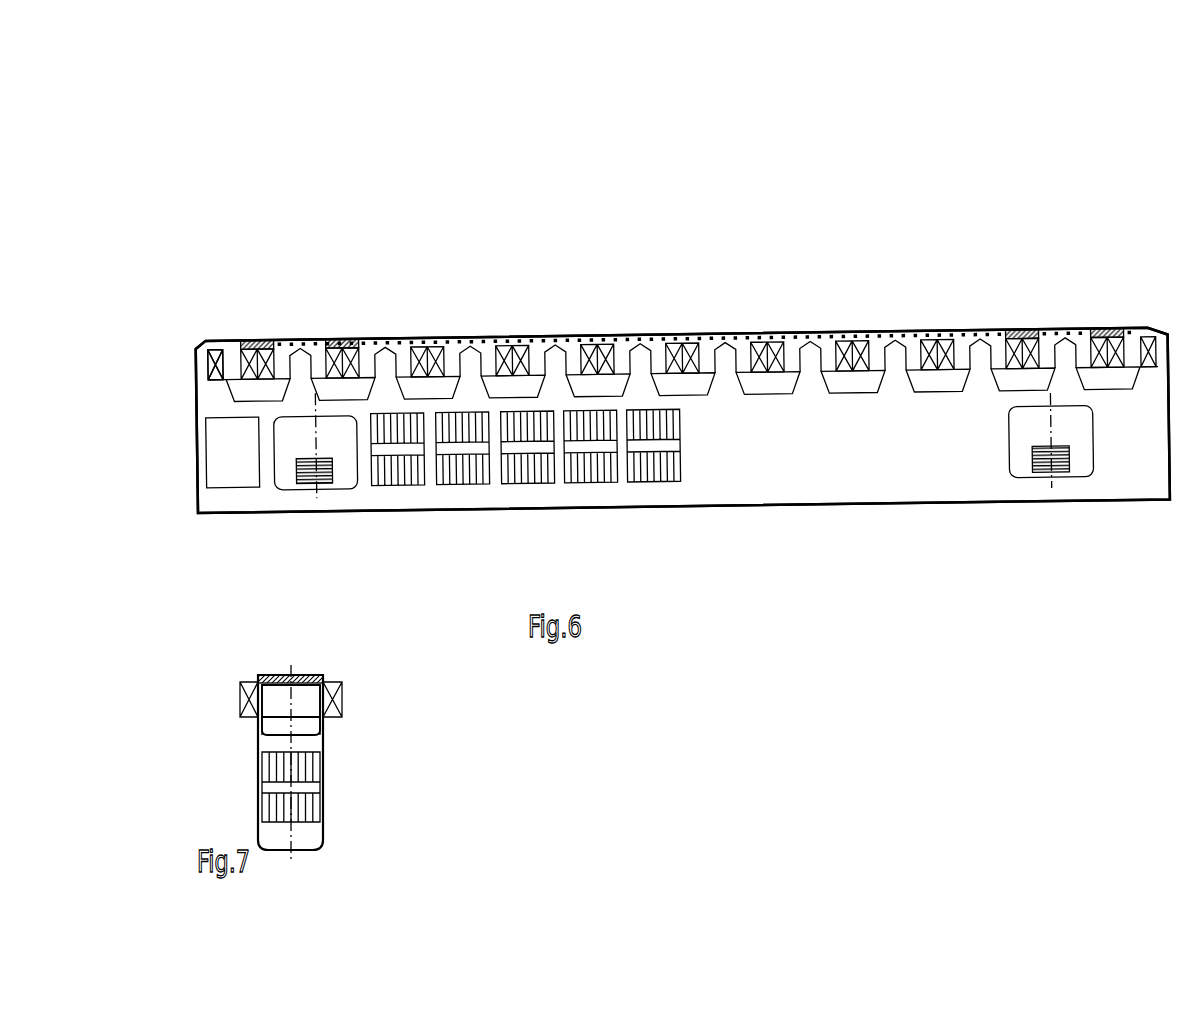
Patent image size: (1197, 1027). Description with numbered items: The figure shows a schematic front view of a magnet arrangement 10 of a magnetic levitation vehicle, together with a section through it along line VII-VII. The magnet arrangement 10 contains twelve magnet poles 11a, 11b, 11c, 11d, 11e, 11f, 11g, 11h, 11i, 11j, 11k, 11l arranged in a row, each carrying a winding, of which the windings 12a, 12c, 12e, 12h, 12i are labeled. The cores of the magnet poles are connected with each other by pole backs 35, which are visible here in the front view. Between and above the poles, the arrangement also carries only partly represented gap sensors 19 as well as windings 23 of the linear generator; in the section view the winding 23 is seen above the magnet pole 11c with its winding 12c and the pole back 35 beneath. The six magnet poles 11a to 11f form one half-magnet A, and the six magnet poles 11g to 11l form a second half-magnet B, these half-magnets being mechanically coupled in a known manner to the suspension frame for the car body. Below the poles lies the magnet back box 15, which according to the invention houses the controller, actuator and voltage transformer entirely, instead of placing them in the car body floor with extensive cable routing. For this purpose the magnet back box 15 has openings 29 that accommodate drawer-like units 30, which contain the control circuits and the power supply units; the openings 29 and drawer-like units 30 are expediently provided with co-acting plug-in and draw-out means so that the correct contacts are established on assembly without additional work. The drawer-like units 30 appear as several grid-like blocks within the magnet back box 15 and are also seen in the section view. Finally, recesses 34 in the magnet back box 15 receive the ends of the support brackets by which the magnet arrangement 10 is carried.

In FIG. 6, the magnet arrangement 10 is at (724, 581).
In FIG. 6, the magnet pole 11a is at (230, 350).
In FIG. 6, the magnet pole 11b is at (286, 358).
In FIG. 6, the magnet pole 11c is at (405, 350).
In FIG. 7, the magnet pole 11c is at (277, 705).
In FIG. 6, the magnet pole 11d is at (487, 350).
In FIG. 6, the magnet pole 11e is at (573, 350).
In FIG. 6, the magnet pole 11f is at (657, 350).
In FIG. 6, the magnet pole 11g is at (743, 350).
In FIG. 6, the magnet pole 11h is at (828, 350).
In FIG. 6, the magnet pole 11i is at (914, 345).
In FIG. 6, the magnet pole 11j is at (997, 345).
In FIG. 6, the magnet pole 11k is at (1081, 345).
In FIG. 6, the magnet pole 11l is at (1135, 345).
In FIG. 6, the winding 12a is at (210, 374).
In FIG. 7, the winding 12c is at (328, 680).
In FIG. 6, the winding 12e is at (592, 350).
In FIG. 6, the winding 12h is at (848, 350).
In FIG. 6, the winding 12i is at (933, 345).
In FIG. 6, the magnet back box 15 is at (893, 477).
In FIG. 7, the magnet back box 15 is at (323, 827).
In FIG. 6, the gap sensor 19 is at (252, 340).
In FIG. 6, the winding of the linear generator 23 is at (311, 345).
In FIG. 7, the winding of the linear generator 23 is at (268, 673).
In FIG. 6, the opening 29 is at (207, 471).
In FIG. 6, the drawer-like unit 30 is at (597, 462).
In FIG. 7, the drawer-like unit 30 is at (278, 810).
In FIG. 6, the recess 34 is at (1048, 470).
In FIG. 6, the pole back 35 is at (854, 370).
In FIG. 7, the pole back 35 is at (323, 733).